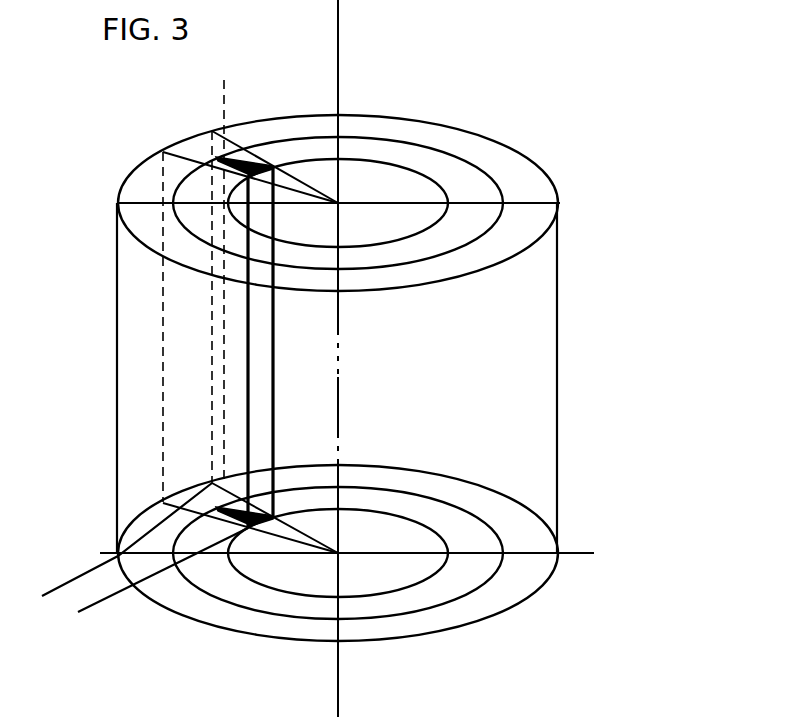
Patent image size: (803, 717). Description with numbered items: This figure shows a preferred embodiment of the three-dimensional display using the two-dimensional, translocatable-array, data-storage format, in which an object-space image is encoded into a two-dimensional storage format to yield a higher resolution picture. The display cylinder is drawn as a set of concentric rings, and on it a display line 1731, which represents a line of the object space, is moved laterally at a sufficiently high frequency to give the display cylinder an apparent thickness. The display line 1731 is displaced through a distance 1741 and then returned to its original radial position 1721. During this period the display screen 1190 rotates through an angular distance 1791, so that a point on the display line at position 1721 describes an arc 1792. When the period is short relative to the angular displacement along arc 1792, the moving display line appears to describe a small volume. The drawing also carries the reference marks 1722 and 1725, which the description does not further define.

The display screen 1190 is at (148, 303).
The inner bore 1722 is at (339, 183).
The arc 1792 is at (205, 150).
The display line 1731 is at (217, 358).
The original radial position 1721 is at (258, 423).
The gap between slab edges 1725 is at (310, 397).
The angular distance 1791 is at (303, 544).
The distance 1741 is at (137, 607).